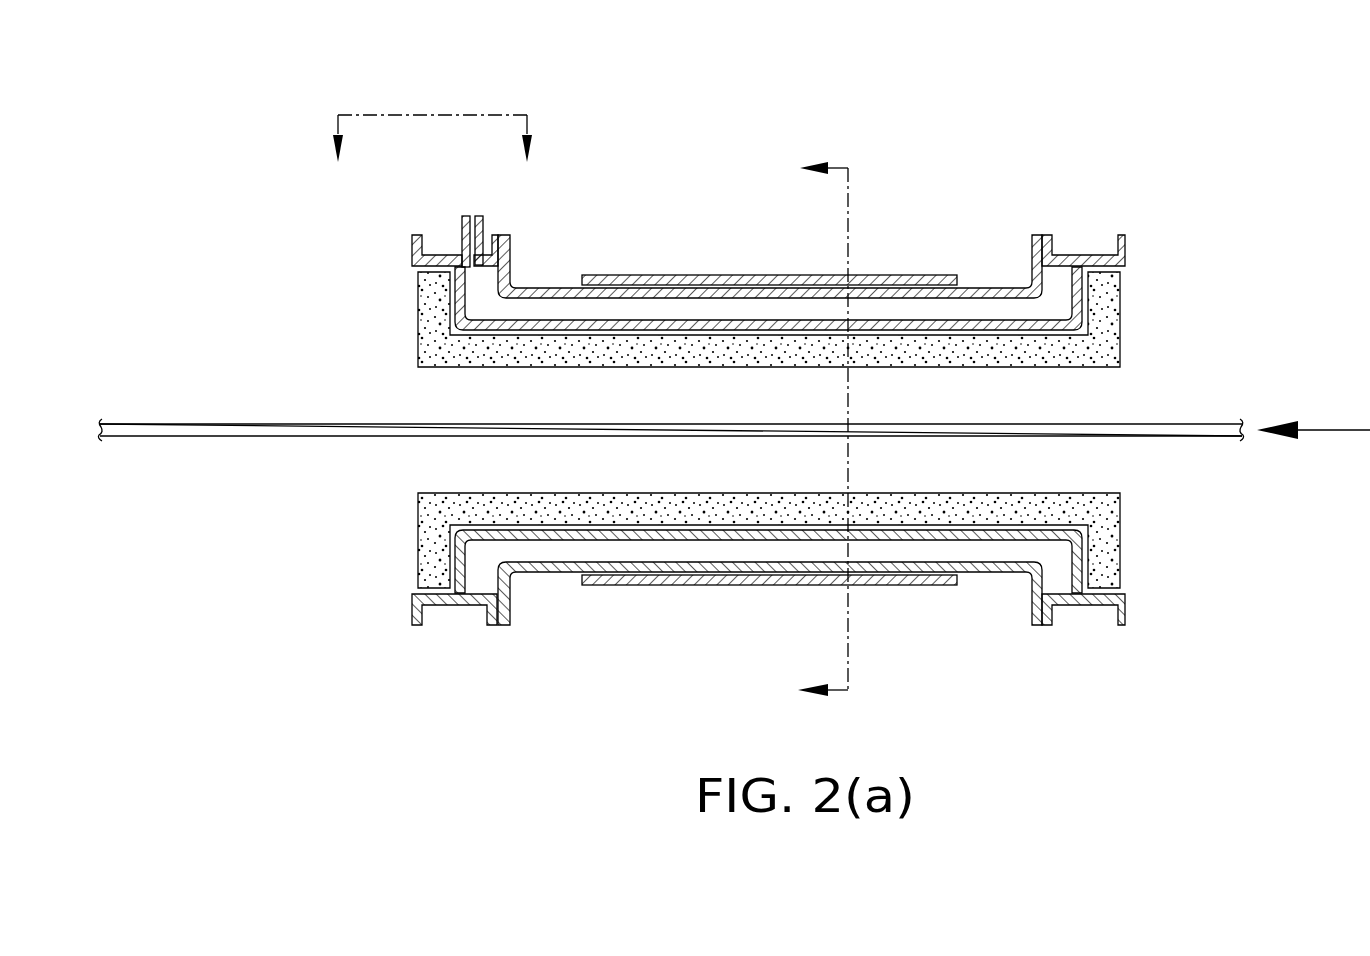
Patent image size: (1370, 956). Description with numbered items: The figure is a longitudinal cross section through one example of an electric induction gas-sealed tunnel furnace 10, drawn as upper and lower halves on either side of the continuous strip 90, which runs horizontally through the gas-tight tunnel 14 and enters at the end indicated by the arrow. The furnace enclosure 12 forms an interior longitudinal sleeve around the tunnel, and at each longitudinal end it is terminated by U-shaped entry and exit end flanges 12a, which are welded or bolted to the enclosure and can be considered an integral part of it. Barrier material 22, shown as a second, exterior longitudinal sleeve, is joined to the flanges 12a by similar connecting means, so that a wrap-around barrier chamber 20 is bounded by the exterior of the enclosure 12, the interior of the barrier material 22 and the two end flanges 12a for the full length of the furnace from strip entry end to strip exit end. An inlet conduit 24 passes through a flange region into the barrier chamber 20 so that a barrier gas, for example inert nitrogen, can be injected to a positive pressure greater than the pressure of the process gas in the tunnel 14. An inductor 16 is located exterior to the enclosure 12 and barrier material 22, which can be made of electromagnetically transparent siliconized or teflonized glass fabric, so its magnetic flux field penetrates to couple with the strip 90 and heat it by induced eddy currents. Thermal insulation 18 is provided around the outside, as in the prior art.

The electric induction gas-sealed tunnel furnace 10 is at (1012, 101).
The furnace enclosure 12 is at (1070, 300).
The entry and exit end flanges 12a is at (500, 245).
The gas-tight tunnel 14 is at (622, 409).
The inductor 16 is at (668, 282).
The thermal insulation 18 is at (443, 350).
The barrier chamber 20 is at (1052, 307).
The barrier material 22 is at (990, 287).
The inlet conduit 24 is at (472, 212).
The strip 90 is at (236, 428).